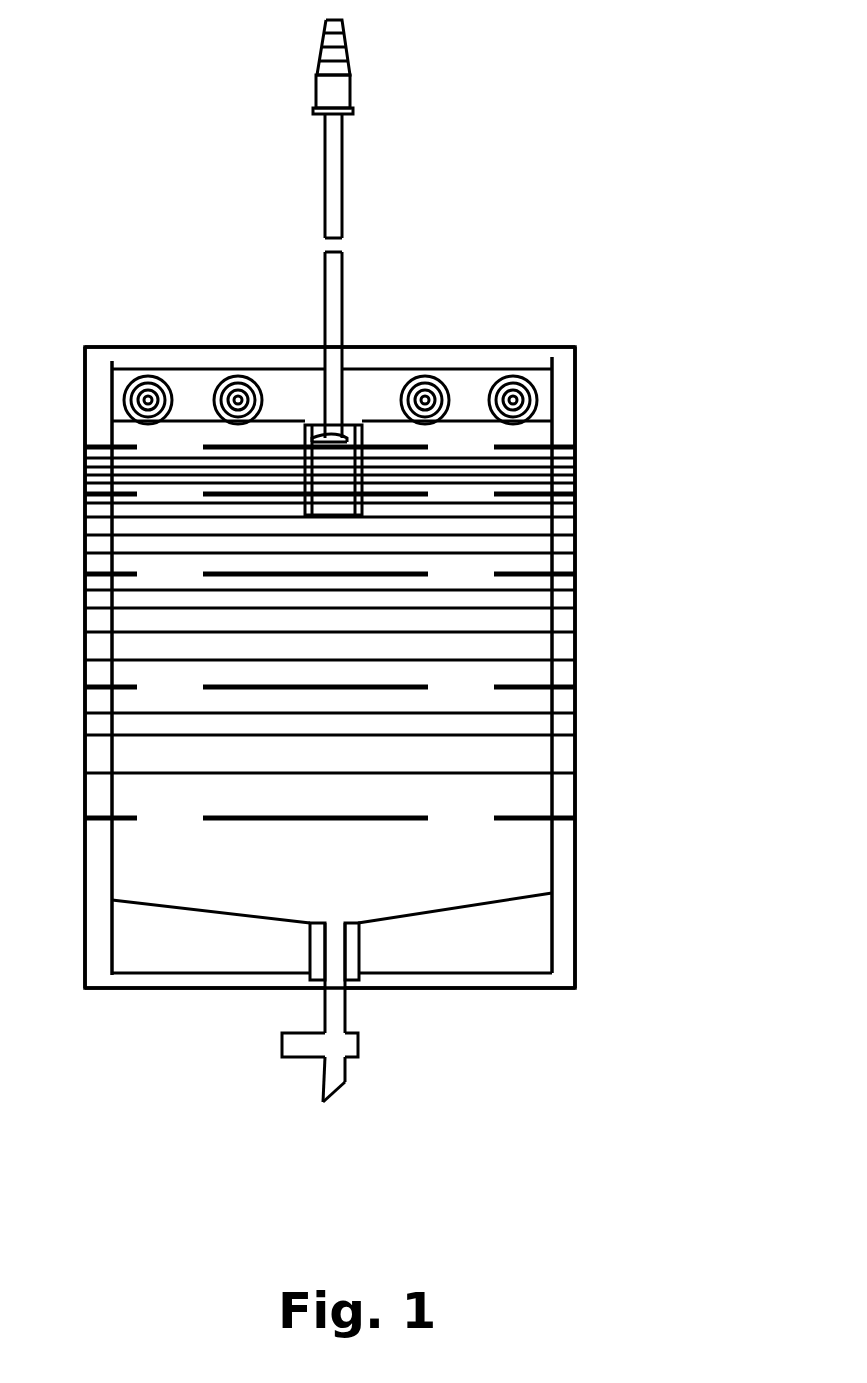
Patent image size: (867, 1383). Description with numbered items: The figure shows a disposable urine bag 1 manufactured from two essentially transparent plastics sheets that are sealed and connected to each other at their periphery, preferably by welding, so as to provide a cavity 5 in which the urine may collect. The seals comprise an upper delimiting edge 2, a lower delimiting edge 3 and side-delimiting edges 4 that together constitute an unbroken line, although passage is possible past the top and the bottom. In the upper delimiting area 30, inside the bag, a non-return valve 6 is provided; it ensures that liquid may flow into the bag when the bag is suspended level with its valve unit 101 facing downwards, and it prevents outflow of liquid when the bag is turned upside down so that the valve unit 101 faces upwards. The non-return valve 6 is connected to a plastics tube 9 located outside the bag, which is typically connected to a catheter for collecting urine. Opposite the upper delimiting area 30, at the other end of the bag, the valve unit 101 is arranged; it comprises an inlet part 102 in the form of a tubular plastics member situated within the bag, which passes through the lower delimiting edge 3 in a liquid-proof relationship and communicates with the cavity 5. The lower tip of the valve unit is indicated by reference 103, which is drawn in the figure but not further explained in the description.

The disposable urine bag 1 is at (650, 475).
The upper delimiting edge 2 is at (450, 347).
The lower delimiting edge 3 is at (438, 973).
The side-delimiting edges 4 is at (560, 645).
The cavity 5 is at (422, 570).
The non-return valve 6 is at (338, 465).
The plastics tube 9 is at (327, 98).
The upper delimiting area 30 is at (285, 450).
The valve unit 101 is at (335, 1034).
The inlet part 102 is at (338, 1010).
The outlet tip 103 is at (338, 1088).